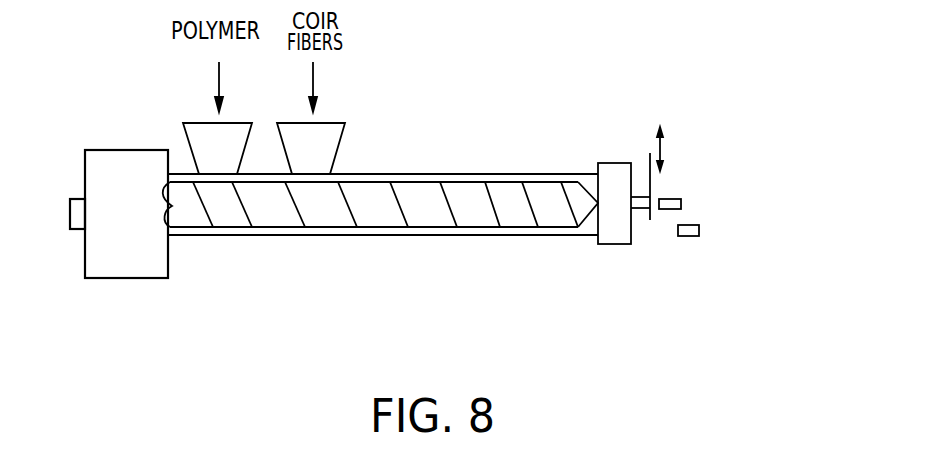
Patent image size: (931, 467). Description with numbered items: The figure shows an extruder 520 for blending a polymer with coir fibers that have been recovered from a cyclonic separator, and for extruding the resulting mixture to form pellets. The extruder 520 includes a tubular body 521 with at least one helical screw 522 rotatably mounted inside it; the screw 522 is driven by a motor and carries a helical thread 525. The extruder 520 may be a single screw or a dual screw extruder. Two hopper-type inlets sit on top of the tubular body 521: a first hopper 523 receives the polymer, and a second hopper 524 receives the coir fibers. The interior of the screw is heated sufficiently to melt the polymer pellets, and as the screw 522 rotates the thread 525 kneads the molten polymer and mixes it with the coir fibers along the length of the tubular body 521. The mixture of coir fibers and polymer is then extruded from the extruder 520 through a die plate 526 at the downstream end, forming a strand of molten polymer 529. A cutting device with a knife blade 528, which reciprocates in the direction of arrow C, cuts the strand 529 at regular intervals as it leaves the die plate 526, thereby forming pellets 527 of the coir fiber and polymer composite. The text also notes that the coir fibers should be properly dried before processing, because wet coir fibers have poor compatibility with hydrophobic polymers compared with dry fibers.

The extruder 520 is at (484, 284).
The tubular body 521 is at (427, 228).
The helical screw 522 is at (322, 213).
The polymer hopper 523 is at (202, 135).
The second hopper 524 is at (343, 143).
The helical thread 525 is at (447, 197).
The die plate 526 is at (612, 246).
The pellets 527 is at (682, 203).
The knife blade 528 is at (652, 183).
The strand of molten polymer 529 is at (645, 192).